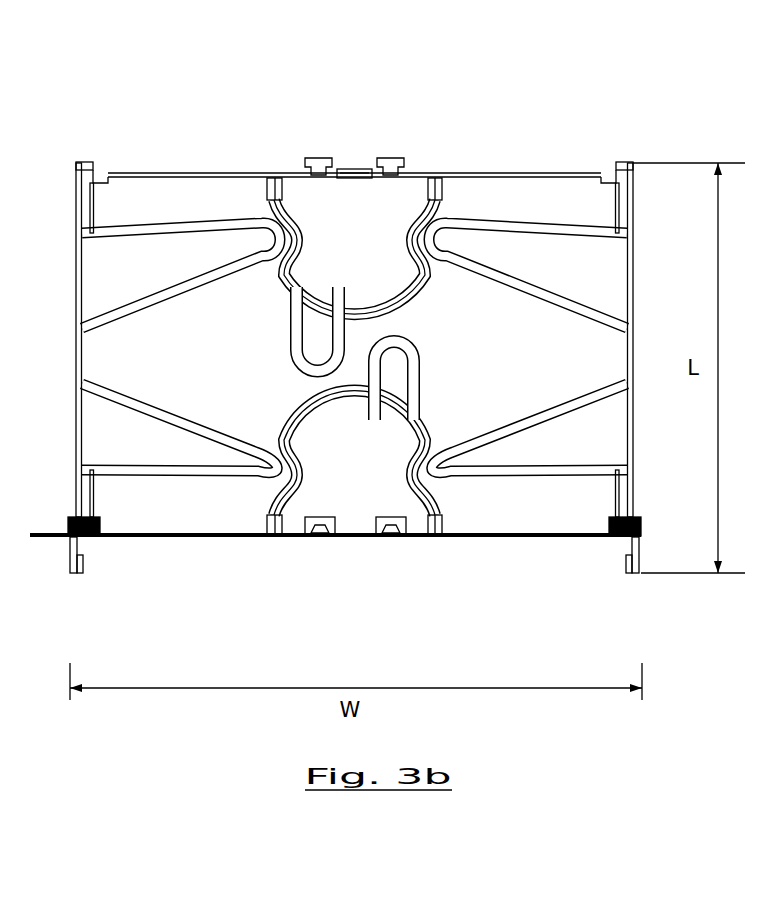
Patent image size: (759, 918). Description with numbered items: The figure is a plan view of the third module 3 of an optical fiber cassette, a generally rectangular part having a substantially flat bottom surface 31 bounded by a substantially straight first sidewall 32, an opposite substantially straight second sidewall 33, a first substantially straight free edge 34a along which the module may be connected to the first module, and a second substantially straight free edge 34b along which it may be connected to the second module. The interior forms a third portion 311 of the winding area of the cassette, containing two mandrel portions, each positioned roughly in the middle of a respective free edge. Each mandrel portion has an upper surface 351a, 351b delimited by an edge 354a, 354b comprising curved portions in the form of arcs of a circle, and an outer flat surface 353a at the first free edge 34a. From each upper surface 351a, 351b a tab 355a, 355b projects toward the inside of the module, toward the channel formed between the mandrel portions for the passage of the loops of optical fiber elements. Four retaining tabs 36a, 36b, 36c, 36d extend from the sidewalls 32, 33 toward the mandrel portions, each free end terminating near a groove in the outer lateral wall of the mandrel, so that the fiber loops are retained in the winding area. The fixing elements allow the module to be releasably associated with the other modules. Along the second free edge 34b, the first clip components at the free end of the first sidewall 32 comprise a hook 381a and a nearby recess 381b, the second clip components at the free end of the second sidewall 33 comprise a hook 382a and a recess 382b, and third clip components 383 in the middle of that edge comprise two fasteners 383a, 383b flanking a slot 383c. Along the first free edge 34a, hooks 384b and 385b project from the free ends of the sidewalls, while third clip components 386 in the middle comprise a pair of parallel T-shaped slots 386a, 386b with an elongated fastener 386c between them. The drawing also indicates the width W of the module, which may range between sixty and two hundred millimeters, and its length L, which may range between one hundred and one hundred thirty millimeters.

The third module 3 is at (167, 118).
The bottom surface 31 is at (346, 360).
The first sidewall 32 is at (76, 252).
The second sidewall 33 is at (637, 287).
The first free edge 34a is at (193, 538).
The second free edge 34b is at (218, 173).
The retaining tab 36a is at (123, 457).
The retaining tab 36b is at (543, 460).
The retaining tab 36c is at (119, 281).
The retaining tab 36d is at (543, 279).
The third portion of the winding area 311 is at (183, 375).
The upper surface 351a is at (380, 484).
The upper surface 351b is at (332, 251).
The outer flat surface 353a is at (292, 538).
The edge 354a is at (435, 538).
The edge 354b is at (440, 170).
The tab 355a is at (410, 383).
The tab 355b is at (293, 327).
The hook 381a is at (75, 165).
The recess 381b is at (104, 179).
The hook 382a is at (633, 163).
The recess 382b is at (612, 176).
The third clip components 383 is at (292, 143).
The fastener 383a is at (318, 157).
The fastener 383b is at (393, 157).
The slot 383c is at (355, 168).
The hook 384b is at (75, 575).
The hook 385b is at (635, 575).
The third clip components 386 is at (420, 568).
The elongated slot 386a is at (322, 538).
The elongated slot 386b is at (390, 538).
The elongated fastener 386c is at (358, 538).